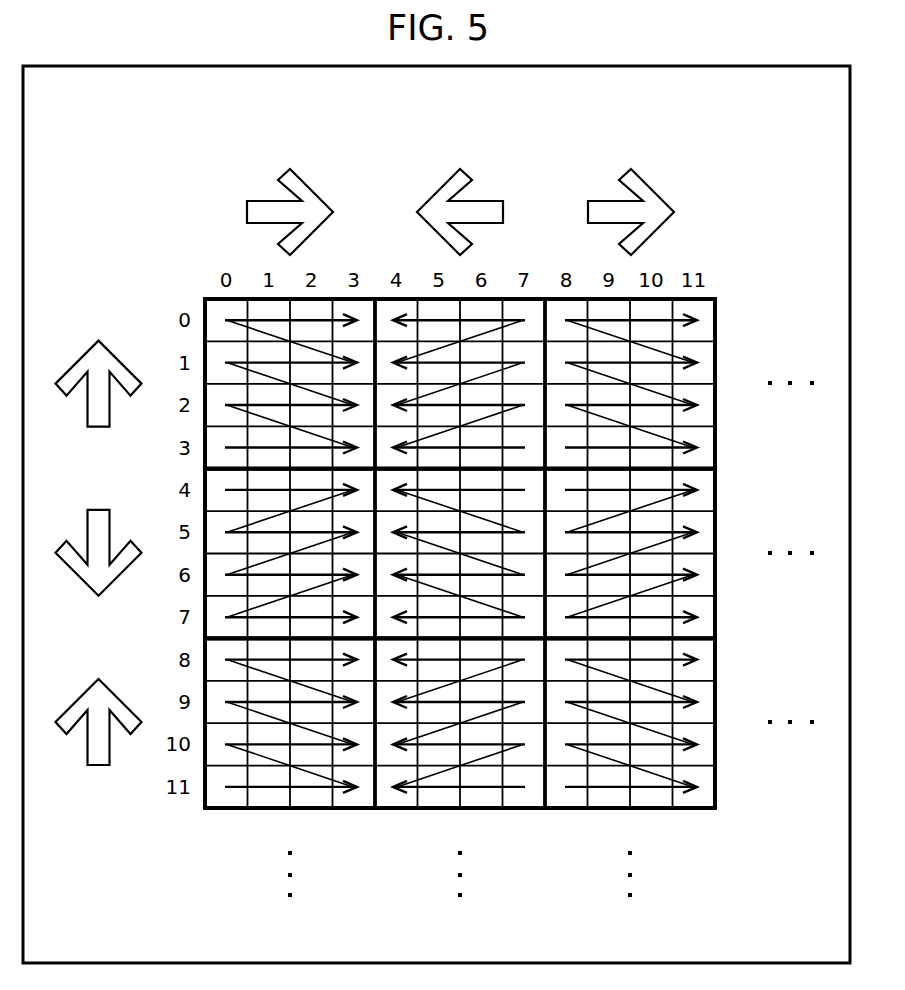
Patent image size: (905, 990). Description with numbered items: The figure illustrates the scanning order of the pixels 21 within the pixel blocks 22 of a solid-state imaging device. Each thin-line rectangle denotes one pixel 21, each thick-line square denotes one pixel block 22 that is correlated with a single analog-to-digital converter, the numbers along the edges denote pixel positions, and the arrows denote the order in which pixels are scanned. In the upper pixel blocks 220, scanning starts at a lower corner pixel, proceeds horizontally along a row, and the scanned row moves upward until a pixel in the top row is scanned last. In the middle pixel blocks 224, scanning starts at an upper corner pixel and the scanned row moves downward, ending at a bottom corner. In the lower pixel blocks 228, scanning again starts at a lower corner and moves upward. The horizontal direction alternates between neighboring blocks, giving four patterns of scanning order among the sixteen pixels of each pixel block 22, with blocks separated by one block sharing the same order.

The pixel 21 is at (440, 524).
The pixel block 22 is at (440, 482).
The pixel block (block row zero) 220 is at (488, 286).
The pixel block (block row four) 224 is at (440, 558).
The pixel block (block row eight) 228 is at (500, 749).